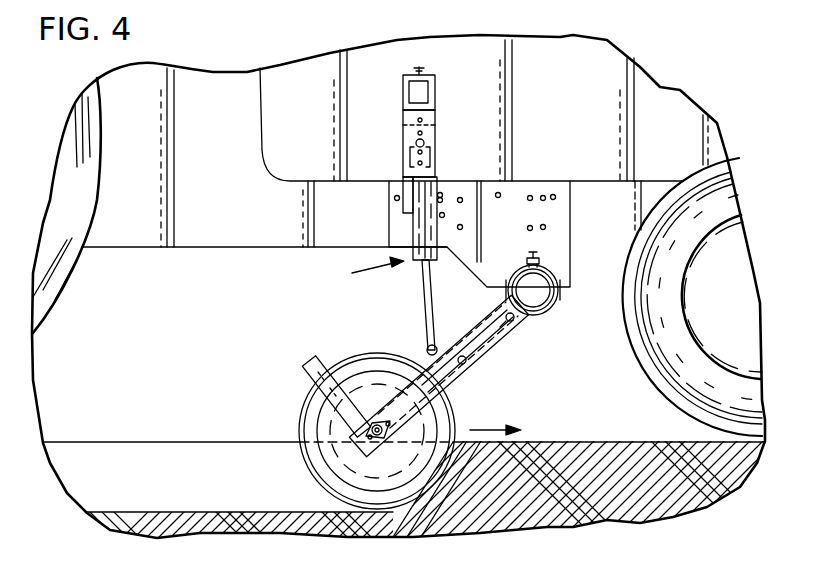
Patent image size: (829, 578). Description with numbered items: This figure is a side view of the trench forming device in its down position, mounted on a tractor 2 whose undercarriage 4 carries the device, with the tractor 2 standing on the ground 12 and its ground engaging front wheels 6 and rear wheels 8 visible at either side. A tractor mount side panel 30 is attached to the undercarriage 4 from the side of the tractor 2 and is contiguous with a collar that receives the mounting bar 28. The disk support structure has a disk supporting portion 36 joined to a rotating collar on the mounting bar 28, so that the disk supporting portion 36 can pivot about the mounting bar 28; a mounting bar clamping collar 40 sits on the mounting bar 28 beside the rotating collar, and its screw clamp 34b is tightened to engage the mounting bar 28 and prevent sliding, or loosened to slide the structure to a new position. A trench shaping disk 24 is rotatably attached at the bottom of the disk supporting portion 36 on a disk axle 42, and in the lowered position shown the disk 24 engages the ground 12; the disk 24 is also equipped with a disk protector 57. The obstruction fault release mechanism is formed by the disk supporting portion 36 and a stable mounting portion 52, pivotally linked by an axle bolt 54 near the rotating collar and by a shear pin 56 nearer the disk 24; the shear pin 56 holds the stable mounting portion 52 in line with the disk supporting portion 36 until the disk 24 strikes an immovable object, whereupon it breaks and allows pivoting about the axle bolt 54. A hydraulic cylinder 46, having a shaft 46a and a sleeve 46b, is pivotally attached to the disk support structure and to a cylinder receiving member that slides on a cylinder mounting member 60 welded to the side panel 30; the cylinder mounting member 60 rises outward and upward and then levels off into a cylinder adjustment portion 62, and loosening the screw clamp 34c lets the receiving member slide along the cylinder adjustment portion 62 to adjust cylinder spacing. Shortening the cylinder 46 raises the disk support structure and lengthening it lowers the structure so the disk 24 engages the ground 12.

The tractor 2 is at (569, 117).
The undercarriage 4 is at (282, 226).
The front wheels 6 is at (738, 300).
The rear wheels 8 is at (75, 216).
The ground 12 is at (627, 457).
The trench shaping disk 24 is at (338, 470).
The mounting bar 28 is at (556, 300).
The tractor mount side panel 30 is at (513, 192).
The screw clamp 34b is at (539, 257).
The screw clamp 34c is at (420, 72).
The disk supporting portion 36 is at (417, 394).
The mounting bar clamping collar 40 is at (541, 262).
The disk axle 42 is at (366, 428).
The hydraulic cylinder 46 is at (361, 270).
The shaft 46a is at (423, 302).
The sleeve 46b is at (414, 193).
The stable mounting portion 52 is at (498, 347).
The axle bolt 54 is at (516, 321).
The shear pin 56 is at (466, 363).
The disk protector 57 is at (302, 360).
The cylinder mounting member 60 is at (428, 92).
The cylinder adjustment portion 62 is at (437, 100).